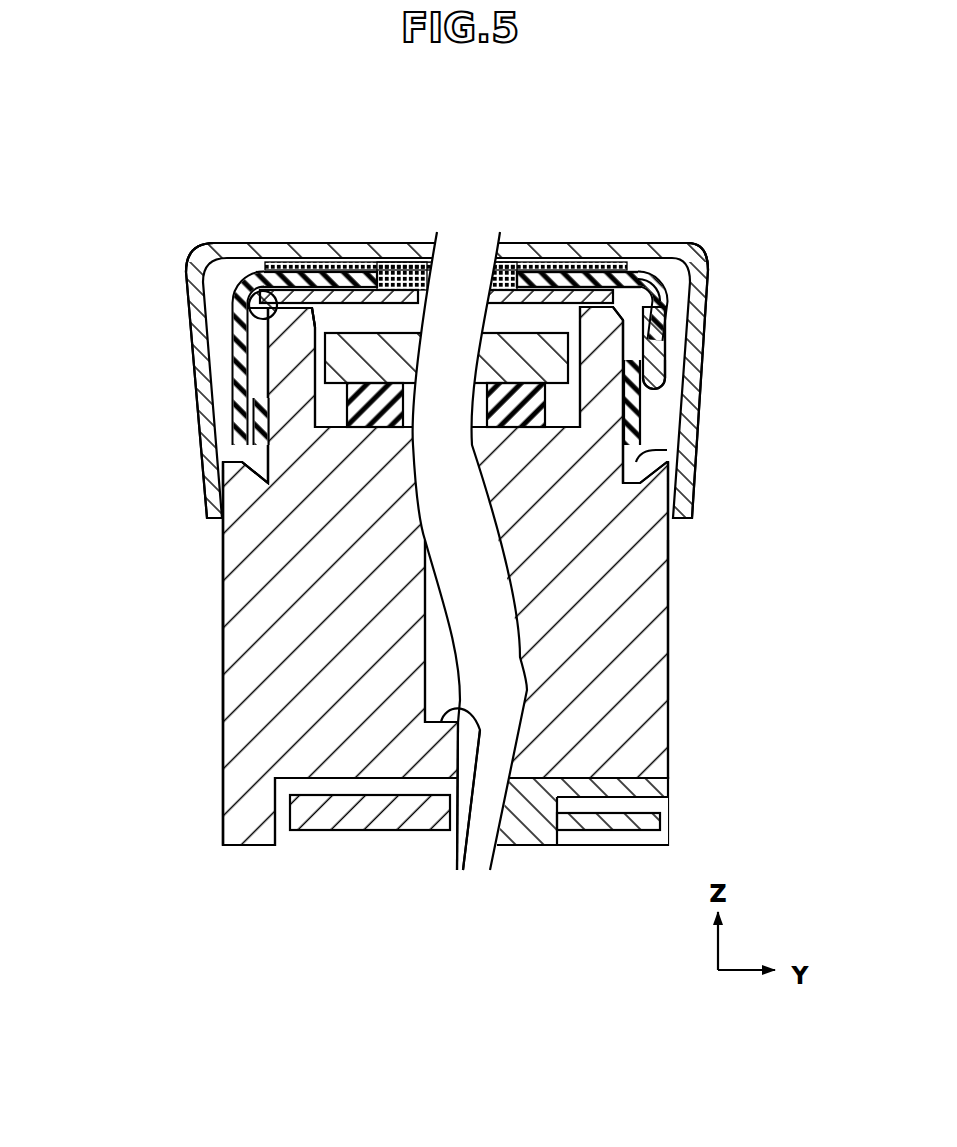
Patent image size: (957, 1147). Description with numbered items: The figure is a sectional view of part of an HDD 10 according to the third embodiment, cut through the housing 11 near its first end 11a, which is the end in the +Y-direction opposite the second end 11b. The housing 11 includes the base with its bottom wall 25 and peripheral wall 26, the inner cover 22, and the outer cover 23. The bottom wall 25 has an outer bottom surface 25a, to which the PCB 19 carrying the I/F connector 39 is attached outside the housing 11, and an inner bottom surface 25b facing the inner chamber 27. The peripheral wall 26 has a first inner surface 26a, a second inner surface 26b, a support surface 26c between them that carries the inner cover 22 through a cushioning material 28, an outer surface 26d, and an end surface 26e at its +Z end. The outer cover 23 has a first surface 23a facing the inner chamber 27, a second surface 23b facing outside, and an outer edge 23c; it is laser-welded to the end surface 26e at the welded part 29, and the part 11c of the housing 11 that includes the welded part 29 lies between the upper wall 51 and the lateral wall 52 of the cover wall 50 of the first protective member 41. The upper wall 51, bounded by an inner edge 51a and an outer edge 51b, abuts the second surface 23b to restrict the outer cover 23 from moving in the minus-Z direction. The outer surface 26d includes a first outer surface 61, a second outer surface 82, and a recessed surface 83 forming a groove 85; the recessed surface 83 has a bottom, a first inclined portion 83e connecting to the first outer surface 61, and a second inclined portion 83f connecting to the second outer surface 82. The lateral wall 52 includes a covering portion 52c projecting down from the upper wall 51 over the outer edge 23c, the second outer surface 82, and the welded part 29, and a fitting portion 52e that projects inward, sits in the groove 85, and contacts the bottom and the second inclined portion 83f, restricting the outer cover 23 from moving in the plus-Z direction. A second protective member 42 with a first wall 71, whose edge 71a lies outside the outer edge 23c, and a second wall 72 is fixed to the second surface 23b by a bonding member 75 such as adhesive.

The HDD 10 is at (215, 138).
The housing 11 is at (225, 760).
The first end 11a is at (668, 595).
The second end 11b is at (225, 640).
The part including the welded part 11c is at (668, 305).
The printed circuit board 19 is at (315, 830).
The inner cover 22 is at (483, 352).
The outer cover 23 is at (384, 333).
The first surface 23a is at (507, 432).
The second surface 23b is at (560, 300).
The outer edge 23c is at (241, 298).
The bottom wall 25 is at (437, 753).
The outer bottom surface 25a is at (343, 778).
The inner bottom surface 25b is at (477, 735).
The peripheral wall 26 is at (262, 705).
The first inner surface 26a is at (425, 672).
The second inner surface 26b is at (323, 313).
The support surface 26c is at (362, 398).
The outer surface 26d is at (225, 557).
The end surface 26e is at (300, 318).
The inner chamber 27 is at (425, 645).
The cushioning material 28 is at (245, 440).
The welded part 29 is at (265, 300).
The I/F connector 39 is at (540, 832).
The first protective member 41 is at (656, 283).
The second protective member 42 is at (197, 447).
The cover wall 50 is at (461, 256).
The upper wall 51 is at (605, 280).
The inner edge 51a is at (510, 280).
The outer edge 51b is at (655, 275).
The lateral wall 52 is at (665, 355).
The covering portion 52c is at (654, 342).
The fitting portion 52e is at (640, 425).
The first outer surface 61 is at (668, 535).
The first wall 71 is at (290, 256).
The edge 71a is at (190, 262).
The second wall 72 is at (212, 490).
The bonding member 75 is at (418, 264).
The second outer surface 82 is at (255, 325).
The recessed surface 83 is at (630, 430).
The first inclined portion 83e is at (676, 490).
The second inclined portion 83f is at (642, 397).
The groove 85 is at (233, 415).